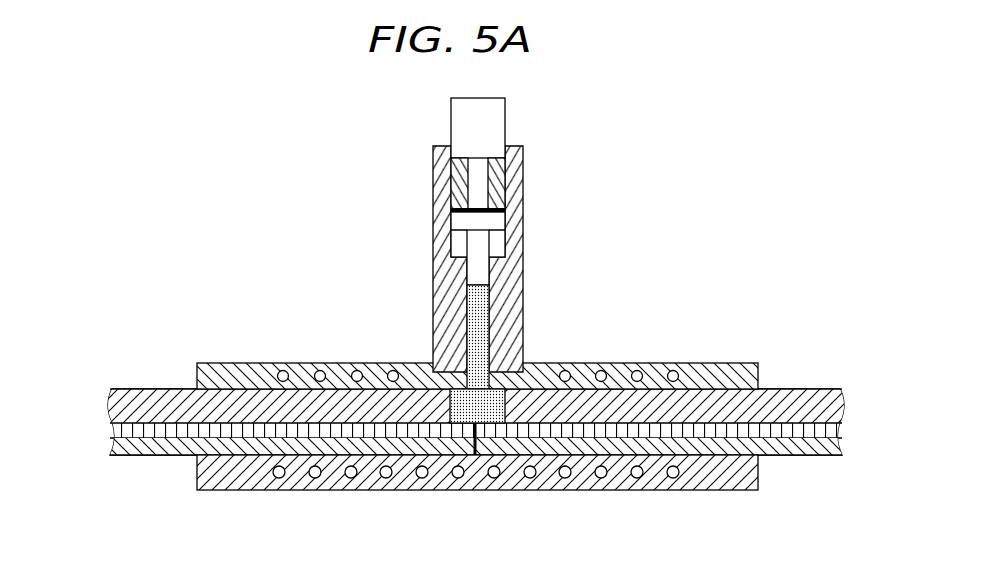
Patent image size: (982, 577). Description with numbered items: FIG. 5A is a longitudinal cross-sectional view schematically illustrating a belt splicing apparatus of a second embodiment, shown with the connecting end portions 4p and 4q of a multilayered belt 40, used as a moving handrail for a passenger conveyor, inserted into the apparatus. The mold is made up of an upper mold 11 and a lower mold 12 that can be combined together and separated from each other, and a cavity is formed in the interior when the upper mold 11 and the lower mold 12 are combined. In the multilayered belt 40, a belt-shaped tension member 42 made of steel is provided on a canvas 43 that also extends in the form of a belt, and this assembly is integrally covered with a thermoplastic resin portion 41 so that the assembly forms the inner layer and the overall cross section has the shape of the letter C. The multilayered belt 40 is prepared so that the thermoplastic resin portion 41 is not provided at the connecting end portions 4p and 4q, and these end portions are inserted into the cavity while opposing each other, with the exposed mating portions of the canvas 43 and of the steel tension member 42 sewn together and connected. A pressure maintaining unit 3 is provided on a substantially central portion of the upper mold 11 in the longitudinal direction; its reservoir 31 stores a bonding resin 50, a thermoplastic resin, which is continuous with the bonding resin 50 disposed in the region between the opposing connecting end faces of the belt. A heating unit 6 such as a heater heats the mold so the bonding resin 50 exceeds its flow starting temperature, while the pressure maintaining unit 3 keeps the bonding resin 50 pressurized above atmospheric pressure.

The pressure maintaining unit 3 is at (523, 151).
The reservoir 31 is at (489, 298).
The bonding resin 50 is at (475, 333).
The upper mold 11 is at (580, 379).
The lower mold 12 is at (687, 472).
The heating unit 6 is at (320, 371).
The multilayered belt 40 is at (78, 300).
The thermoplastic resin portion 41 is at (178, 405).
The tension member 42 is at (150, 433).
The canvas 43 is at (132, 453).
The connecting end portion 4p is at (448, 497).
The connecting end portion 4q is at (762, 494).